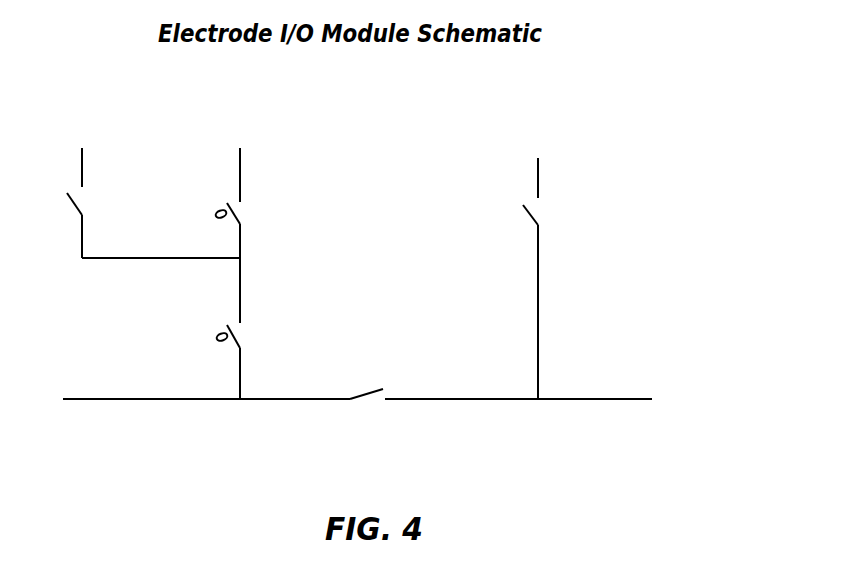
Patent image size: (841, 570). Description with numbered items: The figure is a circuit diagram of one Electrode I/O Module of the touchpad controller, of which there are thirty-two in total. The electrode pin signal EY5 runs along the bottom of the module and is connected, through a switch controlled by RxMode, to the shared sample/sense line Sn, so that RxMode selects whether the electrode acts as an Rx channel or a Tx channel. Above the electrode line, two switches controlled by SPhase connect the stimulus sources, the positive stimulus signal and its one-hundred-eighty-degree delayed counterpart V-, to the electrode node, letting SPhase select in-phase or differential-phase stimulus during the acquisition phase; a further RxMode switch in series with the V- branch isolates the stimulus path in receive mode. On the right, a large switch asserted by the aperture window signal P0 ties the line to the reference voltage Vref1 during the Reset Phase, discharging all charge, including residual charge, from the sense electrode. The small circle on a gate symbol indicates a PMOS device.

The V− stimulus signal V- is at (240, 158).
The SPhase select signal SPhase is at (202, 258).
The RxMode select signal RxMode is at (299, 382).
The electrode pin signal EY5 is at (180, 400).
The sample/sense module signal Sn is at (537, 400).
The reference voltage Vref1 is at (540, 159).
The aperture window signal P0 is at (551, 301).